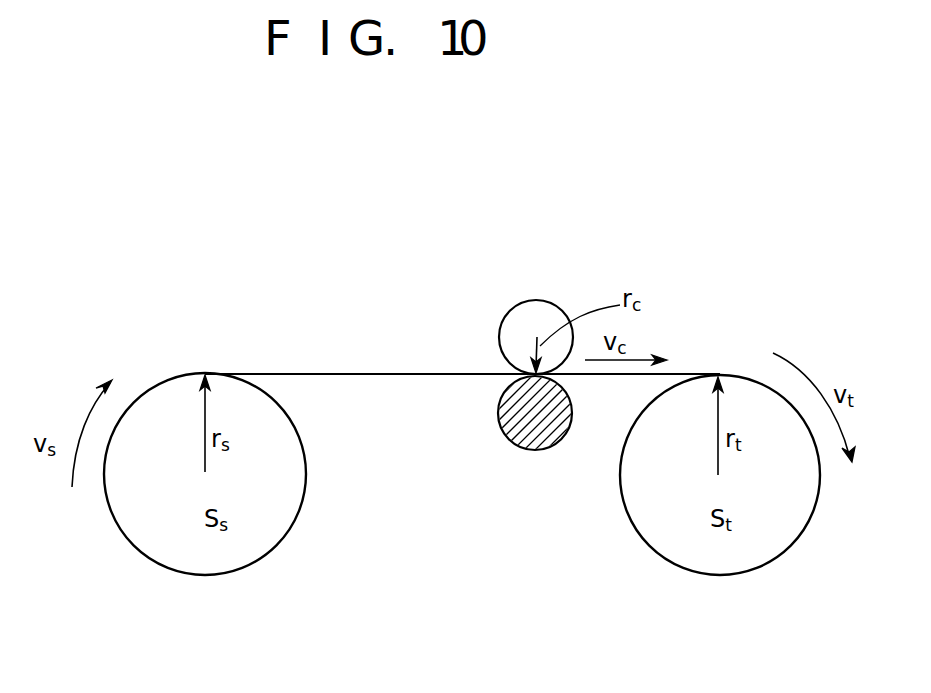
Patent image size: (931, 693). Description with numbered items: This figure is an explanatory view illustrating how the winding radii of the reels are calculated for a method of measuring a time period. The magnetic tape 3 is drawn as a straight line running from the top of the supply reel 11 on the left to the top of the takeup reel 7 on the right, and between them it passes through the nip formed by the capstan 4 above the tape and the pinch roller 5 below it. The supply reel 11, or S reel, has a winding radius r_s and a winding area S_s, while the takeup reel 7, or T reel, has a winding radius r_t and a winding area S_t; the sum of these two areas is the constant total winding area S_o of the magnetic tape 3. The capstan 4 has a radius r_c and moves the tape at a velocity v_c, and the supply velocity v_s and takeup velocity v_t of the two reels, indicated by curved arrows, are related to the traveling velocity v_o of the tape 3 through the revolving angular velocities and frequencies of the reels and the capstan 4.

The magnetic tape 3 is at (420, 377).
The capstan 4 is at (507, 320).
The pinch roller 5 is at (533, 450).
The takeup reel 7 is at (687, 572).
The supply reel 11 is at (165, 567).